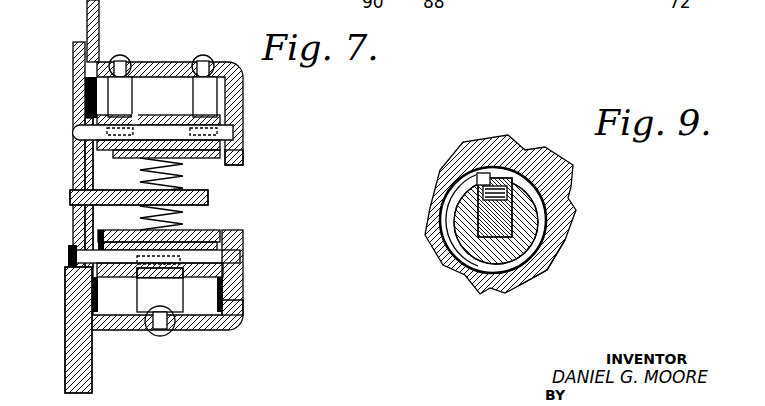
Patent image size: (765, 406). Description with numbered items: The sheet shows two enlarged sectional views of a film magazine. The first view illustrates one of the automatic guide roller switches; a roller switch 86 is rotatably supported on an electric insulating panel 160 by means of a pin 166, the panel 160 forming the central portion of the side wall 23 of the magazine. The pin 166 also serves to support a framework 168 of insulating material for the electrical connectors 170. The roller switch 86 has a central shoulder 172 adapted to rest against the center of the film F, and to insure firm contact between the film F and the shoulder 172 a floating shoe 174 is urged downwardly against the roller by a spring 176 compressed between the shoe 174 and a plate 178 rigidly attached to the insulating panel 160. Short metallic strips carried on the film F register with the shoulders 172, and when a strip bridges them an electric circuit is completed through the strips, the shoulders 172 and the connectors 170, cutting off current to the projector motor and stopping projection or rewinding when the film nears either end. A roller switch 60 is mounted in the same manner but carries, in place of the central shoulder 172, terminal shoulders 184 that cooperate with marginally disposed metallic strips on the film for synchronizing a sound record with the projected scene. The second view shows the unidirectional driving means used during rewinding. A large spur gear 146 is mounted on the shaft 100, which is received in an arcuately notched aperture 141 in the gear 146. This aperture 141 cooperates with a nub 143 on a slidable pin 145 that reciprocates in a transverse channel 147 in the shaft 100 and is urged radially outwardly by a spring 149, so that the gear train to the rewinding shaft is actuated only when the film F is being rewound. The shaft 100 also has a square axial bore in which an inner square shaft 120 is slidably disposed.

In FIG. 7, the wall 23 is at (86, 14).
In FIG. 7, the central shoulder 172 is at (73, 99).
In FIG. 7, the guide roller switch 60 is at (243, 113).
In FIG. 7, the terminal shoulder 184 is at (221, 163).
In FIG. 7, the plate 178 is at (211, 200).
In FIG. 7, the spring 176 is at (186, 221).
In FIG. 7, the floating shoe 174 is at (130, 230).
In FIG. 7, the film F is at (123, 222).
In FIG. 7, the roller switch 86 is at (243, 247).
In FIG. 7, the pin 166 is at (69, 251).
In FIG. 7, the framework 168 is at (232, 330).
In FIG. 7, the electrical connector 170 is at (142, 292).
In FIG. 7, the insulating panel 160 is at (71, 374).
In FIG. 9, the spur gear 146 is at (560, 234).
In FIG. 9, the arcuately notched aperture 141 is at (538, 278).
In FIG. 9, the shaft 100 is at (489, 293).
In FIG. 9, the spring 149 is at (447, 190).
In FIG. 9, the inner square shaft 120 is at (442, 262).
In FIG. 9, the transverse channel 147 is at (573, 180).
In FIG. 9, the slidable pin 145 is at (506, 180).
In FIG. 9, the nub 143 is at (490, 176).